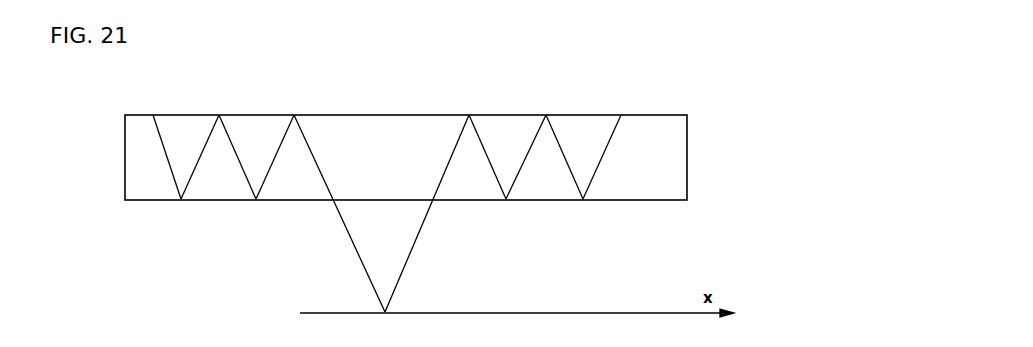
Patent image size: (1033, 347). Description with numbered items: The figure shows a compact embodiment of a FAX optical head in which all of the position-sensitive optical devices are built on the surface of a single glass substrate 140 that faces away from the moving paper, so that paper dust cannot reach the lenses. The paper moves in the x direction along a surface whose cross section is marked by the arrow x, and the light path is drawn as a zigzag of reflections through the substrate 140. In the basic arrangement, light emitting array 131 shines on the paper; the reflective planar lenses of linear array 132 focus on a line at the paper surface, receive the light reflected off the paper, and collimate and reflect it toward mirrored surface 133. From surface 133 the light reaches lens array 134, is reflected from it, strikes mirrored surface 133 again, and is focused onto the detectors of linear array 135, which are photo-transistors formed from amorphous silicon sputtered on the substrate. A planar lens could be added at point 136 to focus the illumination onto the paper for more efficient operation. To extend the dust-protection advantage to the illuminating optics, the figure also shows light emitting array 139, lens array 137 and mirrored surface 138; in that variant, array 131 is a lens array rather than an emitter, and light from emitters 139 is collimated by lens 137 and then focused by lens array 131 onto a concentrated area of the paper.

The substrate 140 is at (688, 142).
The light emitting array 139 is at (153, 113).
The mirrored surface 138 is at (218, 200).
The lens array 137 is at (220, 113).
The light emitting array 131 is at (297, 113).
The point 136 is at (340, 197).
The mirrored surface 133 is at (547, 200).
The linear array of lenses 132 is at (462, 113).
The linear array of lenses 134 is at (547, 113).
The linear array of detectors 135 is at (623, 113).